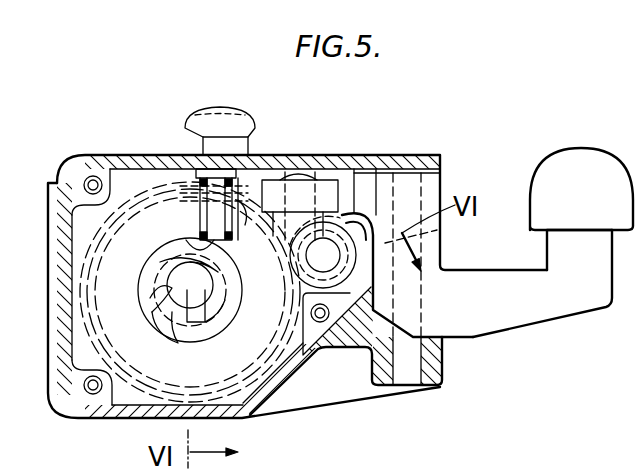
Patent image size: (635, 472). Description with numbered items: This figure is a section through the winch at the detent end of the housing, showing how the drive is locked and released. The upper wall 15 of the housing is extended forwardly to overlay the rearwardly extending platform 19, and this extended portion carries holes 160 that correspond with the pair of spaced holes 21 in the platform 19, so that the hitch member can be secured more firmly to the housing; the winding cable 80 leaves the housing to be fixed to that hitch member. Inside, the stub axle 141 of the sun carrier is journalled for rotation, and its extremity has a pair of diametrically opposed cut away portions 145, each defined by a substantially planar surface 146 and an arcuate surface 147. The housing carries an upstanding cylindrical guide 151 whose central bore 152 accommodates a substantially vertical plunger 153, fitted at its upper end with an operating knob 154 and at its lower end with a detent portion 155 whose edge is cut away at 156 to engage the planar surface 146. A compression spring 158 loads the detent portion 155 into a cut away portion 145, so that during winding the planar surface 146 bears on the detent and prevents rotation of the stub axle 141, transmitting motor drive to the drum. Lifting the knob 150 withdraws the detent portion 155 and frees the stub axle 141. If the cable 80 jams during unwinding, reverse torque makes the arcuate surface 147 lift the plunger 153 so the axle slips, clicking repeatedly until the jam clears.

The upper wall 15 is at (336, 155).
The rearwardly extending platform 19 is at (362, 340).
The spaced holes 21 is at (415, 363).
The wire winding cable 80 is at (356, 163).
The stub axle 141 is at (157, 295).
The cut away portions 145 is at (160, 315).
The planar surface 146 is at (196, 325).
The arcuate surface 147 is at (155, 272).
The knob 150 is at (194, 157).
The cylindrical guide 151 is at (262, 170).
The central bore 152 is at (207, 218).
The plunger 153 is at (190, 200).
The operating knob 154 is at (226, 132).
The detent portion 155 is at (238, 283).
The cut away edge 156 is at (165, 250).
The compression spring 158 is at (245, 187).
The holes 160 is at (412, 157).